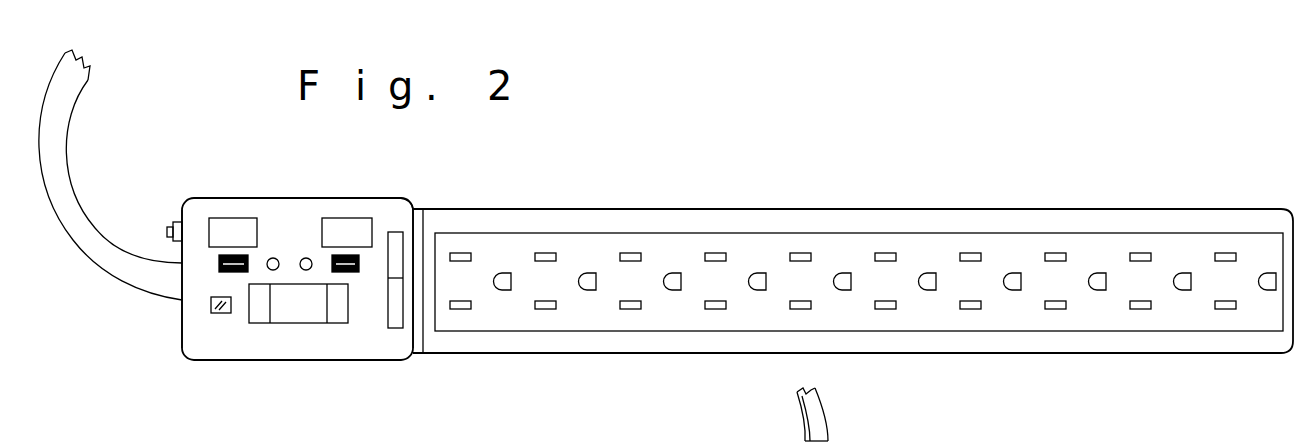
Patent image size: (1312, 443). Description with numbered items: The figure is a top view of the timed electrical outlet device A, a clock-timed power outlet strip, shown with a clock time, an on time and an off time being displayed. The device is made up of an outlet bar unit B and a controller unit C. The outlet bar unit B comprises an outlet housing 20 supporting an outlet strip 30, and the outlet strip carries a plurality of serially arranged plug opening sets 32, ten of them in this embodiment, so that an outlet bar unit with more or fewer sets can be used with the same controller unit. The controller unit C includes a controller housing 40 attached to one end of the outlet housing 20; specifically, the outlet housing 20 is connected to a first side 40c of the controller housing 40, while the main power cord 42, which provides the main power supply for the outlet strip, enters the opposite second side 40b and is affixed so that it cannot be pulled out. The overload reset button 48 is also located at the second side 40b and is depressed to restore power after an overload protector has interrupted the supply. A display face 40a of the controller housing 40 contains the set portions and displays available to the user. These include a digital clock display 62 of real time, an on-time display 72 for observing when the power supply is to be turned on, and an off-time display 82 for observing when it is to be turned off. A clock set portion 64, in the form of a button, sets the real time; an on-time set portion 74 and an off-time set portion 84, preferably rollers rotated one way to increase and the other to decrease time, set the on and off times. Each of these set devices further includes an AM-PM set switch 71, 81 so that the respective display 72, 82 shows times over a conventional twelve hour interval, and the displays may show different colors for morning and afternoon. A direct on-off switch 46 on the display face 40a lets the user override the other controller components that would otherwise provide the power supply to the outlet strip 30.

The outlet housing 20 is at (738, 209).
The outlet strip 30 is at (1000, 332).
The plug opening sets 32 is at (606, 292).
The controller housing 40 is at (318, 360).
The display face 40a is at (256, 349).
The second side 40b is at (178, 336).
The first side 40c is at (417, 226).
The main power cord 42 is at (88, 200).
The direct on-off switch 46 is at (398, 328).
The overload reset button 48 is at (172, 225).
The digital clock display 62 is at (280, 323).
The clock set portion 64 is at (218, 314).
The AM-PM set switch 71 is at (274, 257).
The on-time display 72 is at (221, 218).
The on-time set portion 74 is at (227, 272).
The AM-PM set switch 81 is at (307, 257).
The off-time display 82 is at (355, 217).
The off-time set portion 84 is at (352, 273).
The timed electrical outlet device A is at (632, 160).
The outlet bar unit B is at (877, 205).
The controller unit C is at (190, 178).